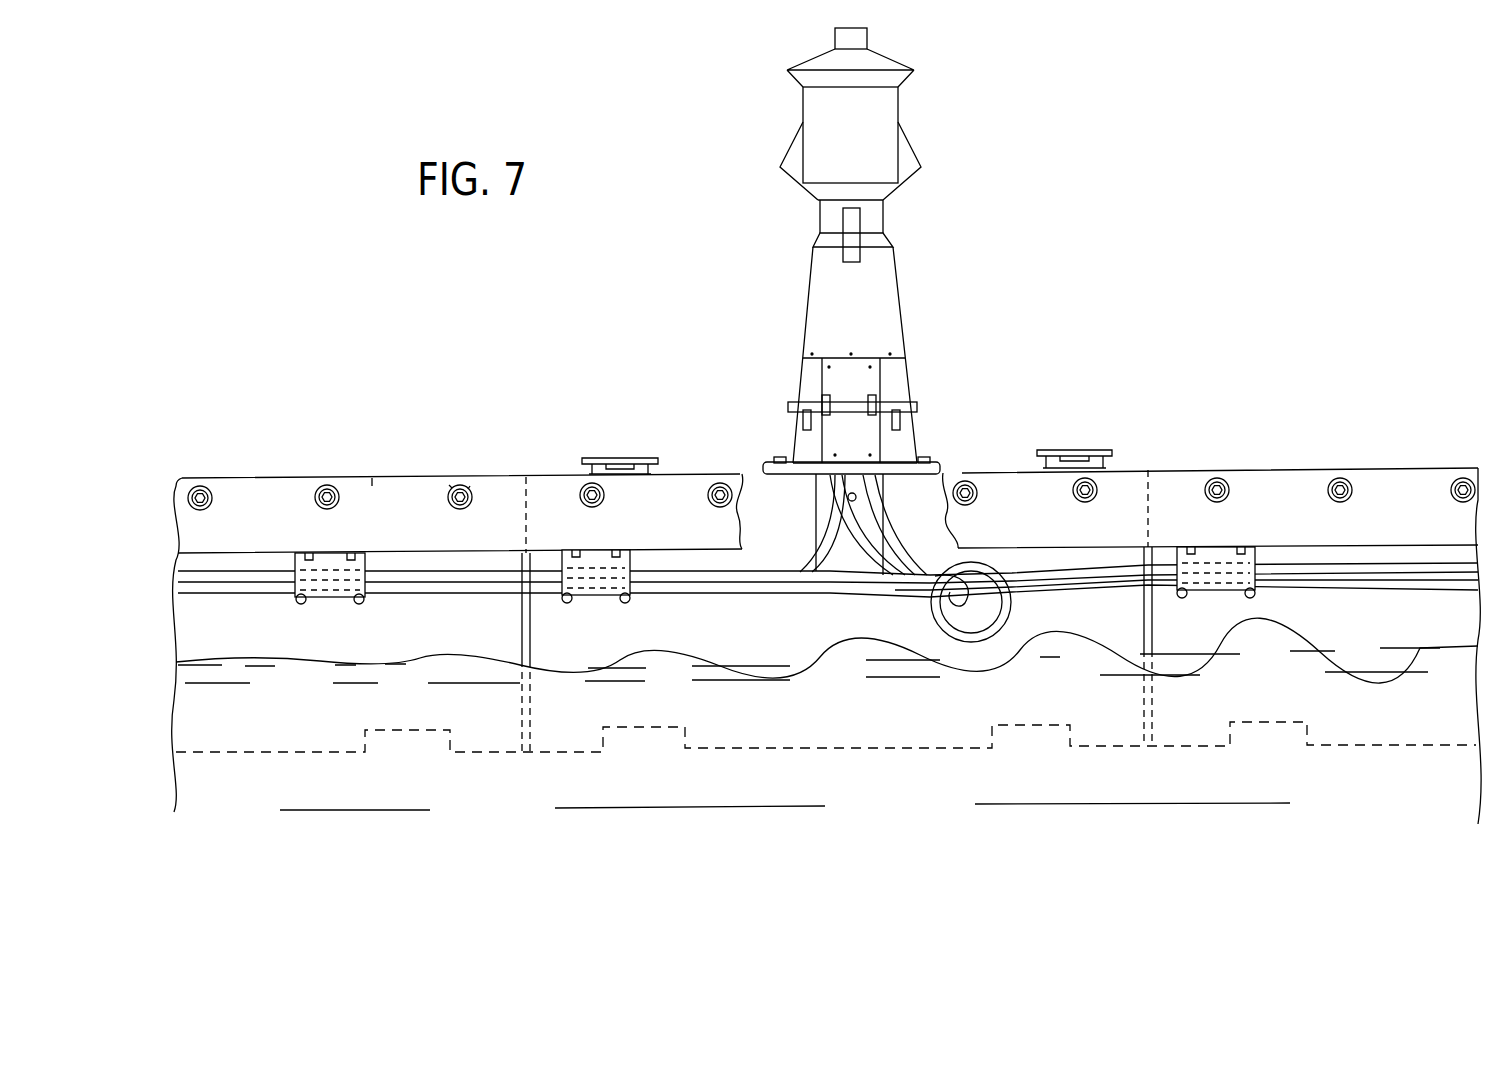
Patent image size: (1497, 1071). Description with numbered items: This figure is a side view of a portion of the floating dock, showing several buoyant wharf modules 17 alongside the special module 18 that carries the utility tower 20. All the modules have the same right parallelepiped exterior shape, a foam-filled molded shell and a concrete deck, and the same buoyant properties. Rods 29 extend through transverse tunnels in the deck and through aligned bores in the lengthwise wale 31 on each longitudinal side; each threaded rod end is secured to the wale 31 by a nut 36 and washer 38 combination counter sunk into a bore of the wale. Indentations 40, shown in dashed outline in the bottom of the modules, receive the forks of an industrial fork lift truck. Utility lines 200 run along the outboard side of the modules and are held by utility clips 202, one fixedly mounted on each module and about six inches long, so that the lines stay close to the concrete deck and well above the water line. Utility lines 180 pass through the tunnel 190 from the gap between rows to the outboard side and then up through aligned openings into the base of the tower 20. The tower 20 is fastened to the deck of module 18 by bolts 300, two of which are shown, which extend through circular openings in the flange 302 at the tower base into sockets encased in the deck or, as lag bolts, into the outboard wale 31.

The buoyant wharf module 17 is at (255, 486).
The utility tower module 18 is at (667, 482).
The utility tower 20 is at (878, 283).
The rods 29 is at (200, 486).
The wale 31 is at (377, 492).
The nut 36 is at (470, 490).
The washer 38 is at (450, 490).
The indentations 40 is at (410, 738).
The utility lines 180 is at (897, 550).
The tunnel 190 is at (985, 620).
The utility lines 200 is at (760, 577).
The utility clips 202 is at (330, 598).
The bolts 300 is at (778, 460).
The flange 302 is at (813, 460).